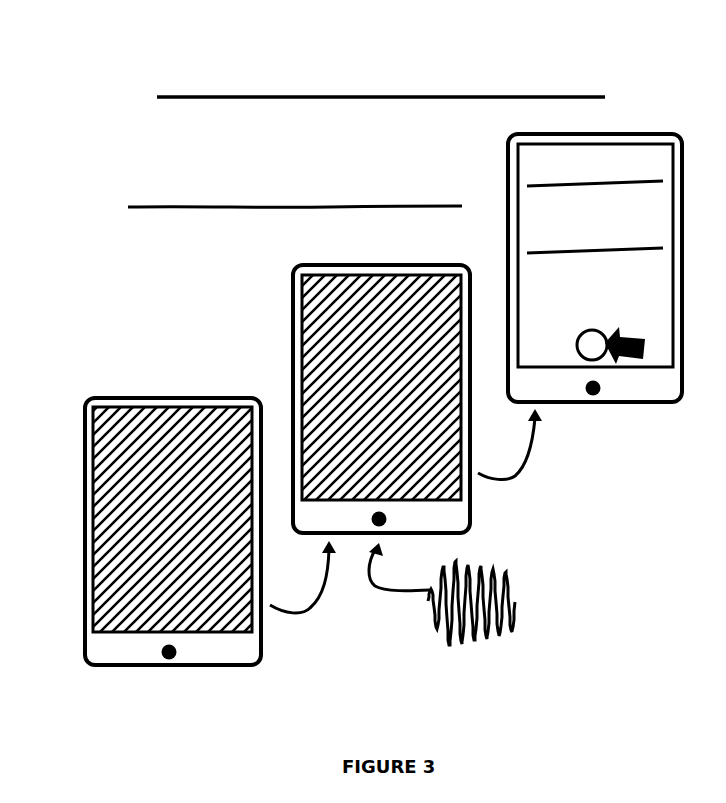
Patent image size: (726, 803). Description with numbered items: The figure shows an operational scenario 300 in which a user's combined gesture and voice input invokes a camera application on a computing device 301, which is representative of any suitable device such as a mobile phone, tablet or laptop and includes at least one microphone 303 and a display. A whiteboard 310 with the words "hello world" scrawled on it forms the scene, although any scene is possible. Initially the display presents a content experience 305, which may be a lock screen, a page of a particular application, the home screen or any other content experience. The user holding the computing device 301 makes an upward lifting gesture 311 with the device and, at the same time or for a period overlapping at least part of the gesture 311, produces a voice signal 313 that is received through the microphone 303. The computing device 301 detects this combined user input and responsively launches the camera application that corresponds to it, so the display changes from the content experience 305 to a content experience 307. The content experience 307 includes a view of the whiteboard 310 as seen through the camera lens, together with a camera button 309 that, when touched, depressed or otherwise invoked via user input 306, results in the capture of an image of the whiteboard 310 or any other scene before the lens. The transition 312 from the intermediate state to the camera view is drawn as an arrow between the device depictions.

The operational scenario 300 is at (55, 58).
The computing device 301 is at (130, 655).
The microphone 303 is at (179, 654).
The content experience 305 is at (157, 539).
The user input 306 is at (630, 336).
The content experience 307 is at (570, 173).
The camera button 309 is at (577, 345).
The whiteboard 310 is at (247, 199).
The upward lifting gesture 311 is at (322, 609).
The data transfer to receiving device 312 is at (526, 476).
The voice signal 313 is at (527, 616).